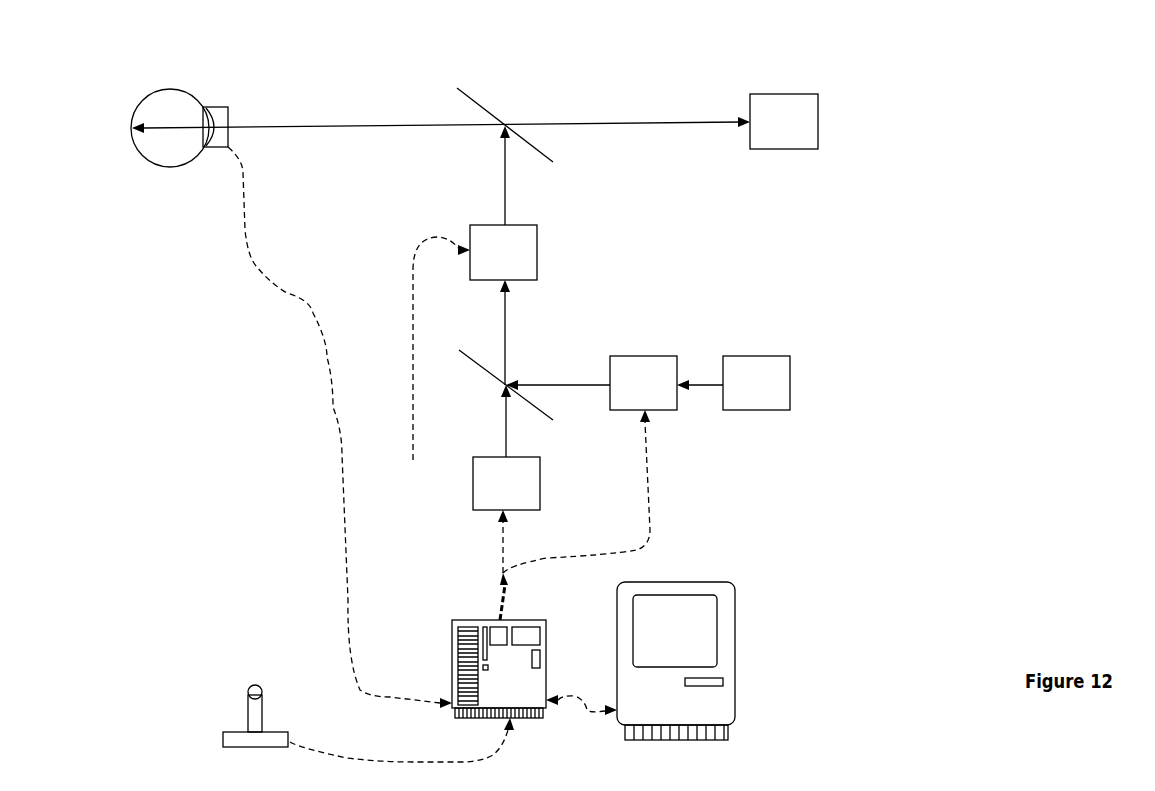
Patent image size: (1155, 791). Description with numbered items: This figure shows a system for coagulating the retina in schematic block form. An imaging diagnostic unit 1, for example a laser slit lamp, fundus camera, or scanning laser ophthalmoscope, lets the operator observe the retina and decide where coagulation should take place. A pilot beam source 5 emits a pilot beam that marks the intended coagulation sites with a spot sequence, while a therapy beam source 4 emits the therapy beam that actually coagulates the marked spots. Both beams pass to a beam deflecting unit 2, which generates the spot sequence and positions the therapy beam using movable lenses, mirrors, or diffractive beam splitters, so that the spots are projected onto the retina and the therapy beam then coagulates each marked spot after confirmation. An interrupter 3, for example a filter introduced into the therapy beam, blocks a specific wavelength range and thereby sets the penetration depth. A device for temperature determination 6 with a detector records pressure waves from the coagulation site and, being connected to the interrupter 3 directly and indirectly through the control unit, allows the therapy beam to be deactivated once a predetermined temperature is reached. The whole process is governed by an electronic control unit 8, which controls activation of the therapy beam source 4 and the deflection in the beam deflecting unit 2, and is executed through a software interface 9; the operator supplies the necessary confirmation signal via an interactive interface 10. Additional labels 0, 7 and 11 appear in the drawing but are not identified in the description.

The optical system 0 is at (112, 52).
The imaging diagnostic unit 1 is at (481, 121).
The beam deflecting unit 2 is at (475, 293).
The interrupter 3 is at (590, 464).
The therapy beam source 4 is at (733, 383).
The pilot beam source 5 is at (506, 479).
The device for temperature determination 6 is at (227, 118).
The eye 7 is at (170, 128).
The electronic control unit 8 is at (387, 454).
The software interface 9 is at (640, 661).
The interactive interface 10 is at (252, 716).
The beam splitter 11 is at (505, 254).